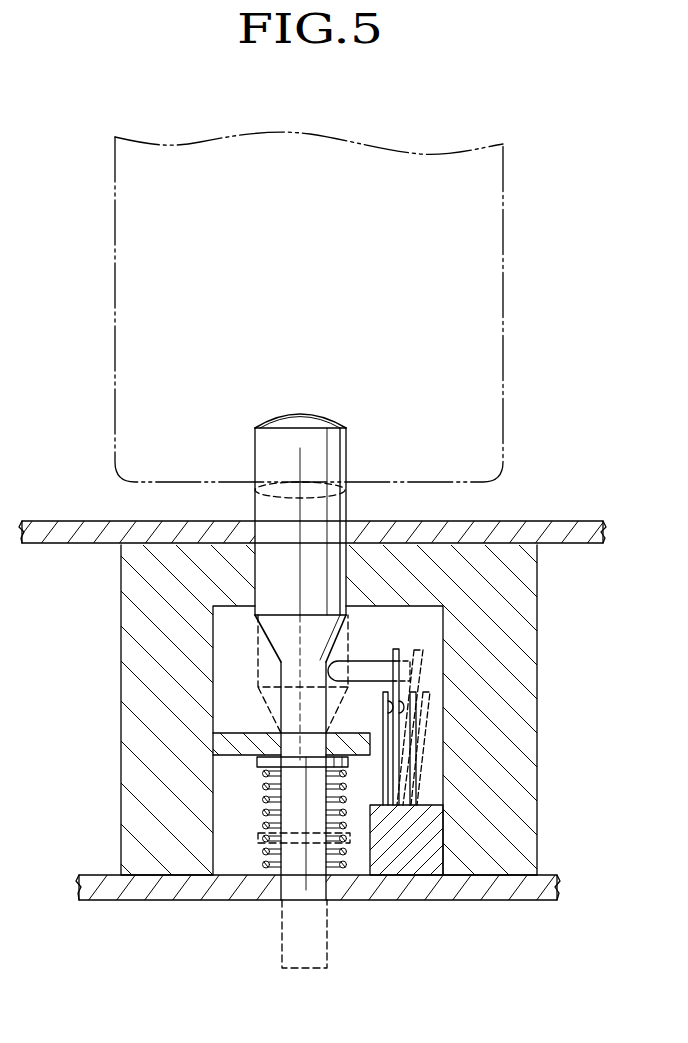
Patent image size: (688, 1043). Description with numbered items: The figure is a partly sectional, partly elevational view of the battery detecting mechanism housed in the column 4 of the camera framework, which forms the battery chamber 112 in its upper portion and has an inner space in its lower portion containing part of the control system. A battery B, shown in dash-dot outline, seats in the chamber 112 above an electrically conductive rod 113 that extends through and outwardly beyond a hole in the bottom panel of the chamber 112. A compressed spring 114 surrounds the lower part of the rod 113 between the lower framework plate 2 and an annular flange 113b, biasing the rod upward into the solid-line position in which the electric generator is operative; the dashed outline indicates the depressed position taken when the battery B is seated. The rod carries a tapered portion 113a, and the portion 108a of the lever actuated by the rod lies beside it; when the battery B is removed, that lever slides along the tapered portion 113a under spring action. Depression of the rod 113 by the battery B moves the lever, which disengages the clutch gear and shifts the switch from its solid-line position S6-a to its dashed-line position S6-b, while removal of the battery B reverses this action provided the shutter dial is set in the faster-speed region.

The battery B is at (480, 279).
The lower framework plate 2 is at (492, 887).
The column 4 is at (508, 657).
The battery chamber 112 is at (566, 530).
The electrically conductive rod 113 is at (330, 450).
The tapered portion 113a is at (286, 635).
The annular flange 113b is at (264, 769).
The compressed spring 114 is at (346, 856).
The slot 108a is at (372, 665).
The switch S6 in its "a" position S6-a is at (397, 762).
The switch S6 in its "b" position S6-b is at (408, 783).